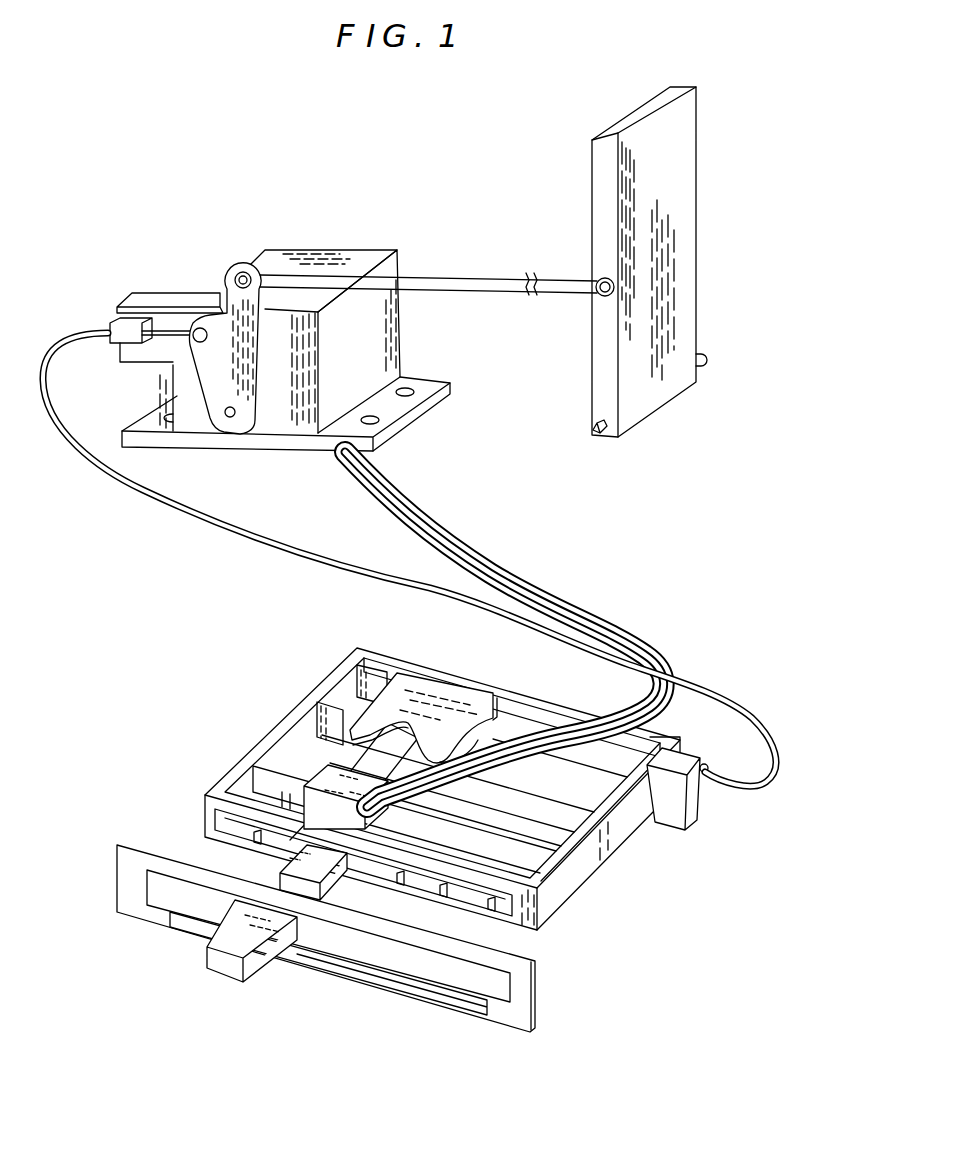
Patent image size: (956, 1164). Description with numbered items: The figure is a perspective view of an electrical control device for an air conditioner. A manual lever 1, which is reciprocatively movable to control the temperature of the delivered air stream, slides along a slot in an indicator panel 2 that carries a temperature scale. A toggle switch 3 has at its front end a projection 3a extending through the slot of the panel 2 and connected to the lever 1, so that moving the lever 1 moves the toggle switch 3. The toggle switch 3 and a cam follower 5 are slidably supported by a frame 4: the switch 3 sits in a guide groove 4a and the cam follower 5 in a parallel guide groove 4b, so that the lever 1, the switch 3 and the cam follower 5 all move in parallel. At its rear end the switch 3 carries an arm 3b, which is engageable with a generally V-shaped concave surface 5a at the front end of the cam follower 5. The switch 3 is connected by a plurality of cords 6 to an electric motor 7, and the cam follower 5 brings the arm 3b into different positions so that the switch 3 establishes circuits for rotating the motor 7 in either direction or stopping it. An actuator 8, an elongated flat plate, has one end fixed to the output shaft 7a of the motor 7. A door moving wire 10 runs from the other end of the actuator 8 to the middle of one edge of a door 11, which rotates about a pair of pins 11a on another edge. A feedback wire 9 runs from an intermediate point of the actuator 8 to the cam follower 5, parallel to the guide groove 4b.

The manual lever 1 is at (225, 962).
The indicator panel 2 is at (523, 988).
The toggle switch 3 is at (300, 765).
The projection 3a is at (323, 877).
The arm 3b is at (317, 774).
The frame 4 is at (632, 834).
The guide groove 4a is at (528, 867).
The guide groove 4b is at (357, 697).
The cam follower 5 is at (449, 681).
The V-shaped concave surface 5a is at (457, 707).
The cords 6 is at (552, 583).
The electric motor 7 is at (402, 351).
The output shaft 7a is at (230, 418).
The actuator 8 is at (233, 314).
The feedback wire 9 is at (136, 496).
The door moving wire 10 is at (446, 277).
The door 11 is at (699, 173).
The pins 11a is at (708, 362).